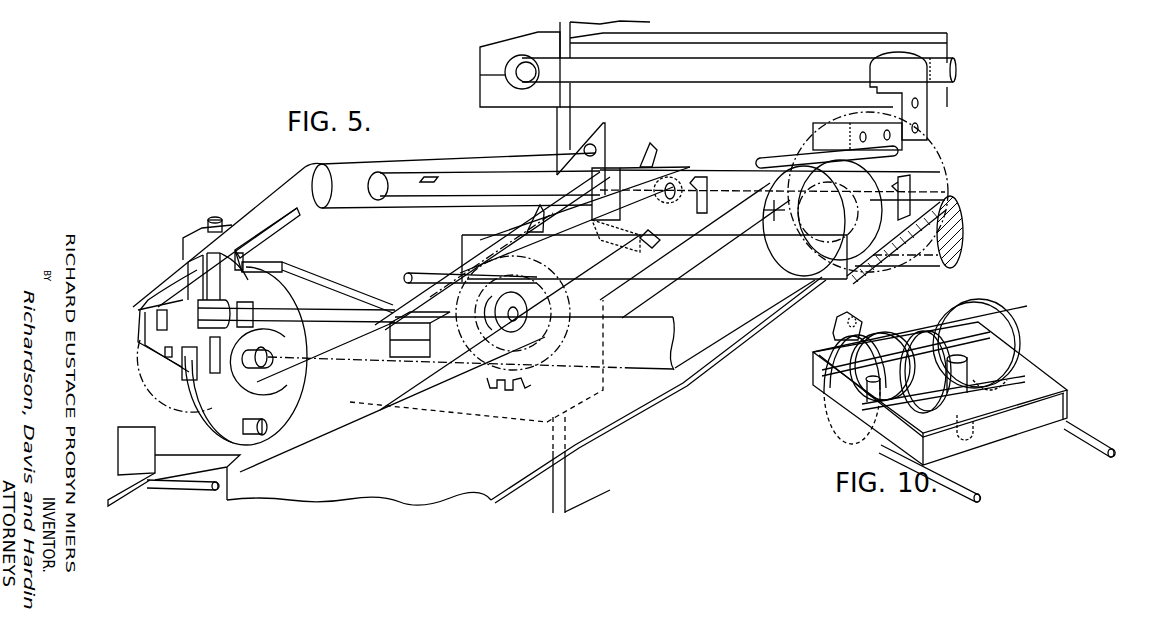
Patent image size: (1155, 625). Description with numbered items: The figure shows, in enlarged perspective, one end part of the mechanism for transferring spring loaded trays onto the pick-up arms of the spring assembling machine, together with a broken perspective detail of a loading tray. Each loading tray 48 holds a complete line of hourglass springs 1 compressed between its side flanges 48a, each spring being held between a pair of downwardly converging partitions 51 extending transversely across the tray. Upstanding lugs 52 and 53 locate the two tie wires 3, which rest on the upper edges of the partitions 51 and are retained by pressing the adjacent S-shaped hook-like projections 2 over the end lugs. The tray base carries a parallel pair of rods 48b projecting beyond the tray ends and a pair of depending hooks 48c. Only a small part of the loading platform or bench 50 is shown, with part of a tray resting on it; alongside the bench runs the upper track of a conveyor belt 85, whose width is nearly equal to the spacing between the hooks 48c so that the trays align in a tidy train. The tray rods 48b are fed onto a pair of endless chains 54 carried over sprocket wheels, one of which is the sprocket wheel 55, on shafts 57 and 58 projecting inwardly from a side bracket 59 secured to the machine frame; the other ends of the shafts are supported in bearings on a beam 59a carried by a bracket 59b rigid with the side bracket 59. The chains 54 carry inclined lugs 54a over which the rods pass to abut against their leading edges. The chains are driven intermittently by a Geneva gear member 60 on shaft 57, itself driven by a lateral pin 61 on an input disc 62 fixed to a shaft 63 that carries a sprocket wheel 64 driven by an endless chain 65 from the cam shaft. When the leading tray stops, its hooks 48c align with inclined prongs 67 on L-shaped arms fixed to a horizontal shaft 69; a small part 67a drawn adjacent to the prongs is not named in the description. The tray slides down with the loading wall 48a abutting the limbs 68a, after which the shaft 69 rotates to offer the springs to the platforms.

In FIG. 5, the spring 1 is at (940, 140).
In FIG. 10, the spring 1 is at (1020, 343).
In FIG. 10, the hook-like projection 2 is at (970, 362).
In FIG. 10, the tie wire 3 is at (893, 410).
In FIG. 5, the loading tray 48 is at (527, 338).
In FIG. 10, the loading tray 48 is at (940, 393).
In FIG. 10, the side flange 48a is at (1040, 390).
In FIG. 5, the rod 48b is at (207, 488).
In FIG. 10, the rod 48b is at (1087, 440).
In FIG. 5, the hook 48c is at (650, 247).
In FIG. 10, the hook 48c is at (977, 434).
In FIG. 5, the loading platform 50 is at (210, 465).
In FIG. 10, the partition 51 is at (986, 413).
In FIG. 5, the lug 52 is at (622, 226).
In FIG. 10, the lug 52 is at (900, 372).
In FIG. 5, the lug 53 is at (708, 183).
In FIG. 10, the lug 53 is at (857, 317).
In FIG. 5, the endless chain 54 is at (567, 330).
In FIG. 5, the lug 54a is at (650, 150).
In FIG. 5, the sprocket wheel 55 is at (487, 390).
In FIG. 5, the shaft 57 is at (308, 315).
In FIG. 5, the shaft 58 is at (457, 188).
In FIG. 5, the side bracket 59 is at (302, 195).
In FIG. 5, the beam 59a is at (400, 348).
In FIG. 5, the bracket 59b is at (386, 260).
In FIG. 5, the Geneva gear member 60 is at (198, 288).
In FIG. 5, the lateral pin 61 is at (267, 425).
In FIG. 5, the input disc 62 is at (246, 356).
In FIG. 5, the shaft 63 is at (262, 352).
In FIG. 5, the sprocket wheel 64 is at (167, 387).
In FIG. 5, the endless chain 65 is at (873, 118).
In FIG. 5, the prong 67 is at (761, 160).
In FIG. 5, the lever block 67a is at (838, 133).
In FIG. 5, the limb 68a is at (919, 105).
In FIG. 5, the horizontal shaft 69 is at (742, 72).
In FIG. 5, the conveyor belt 85 is at (526, 342).